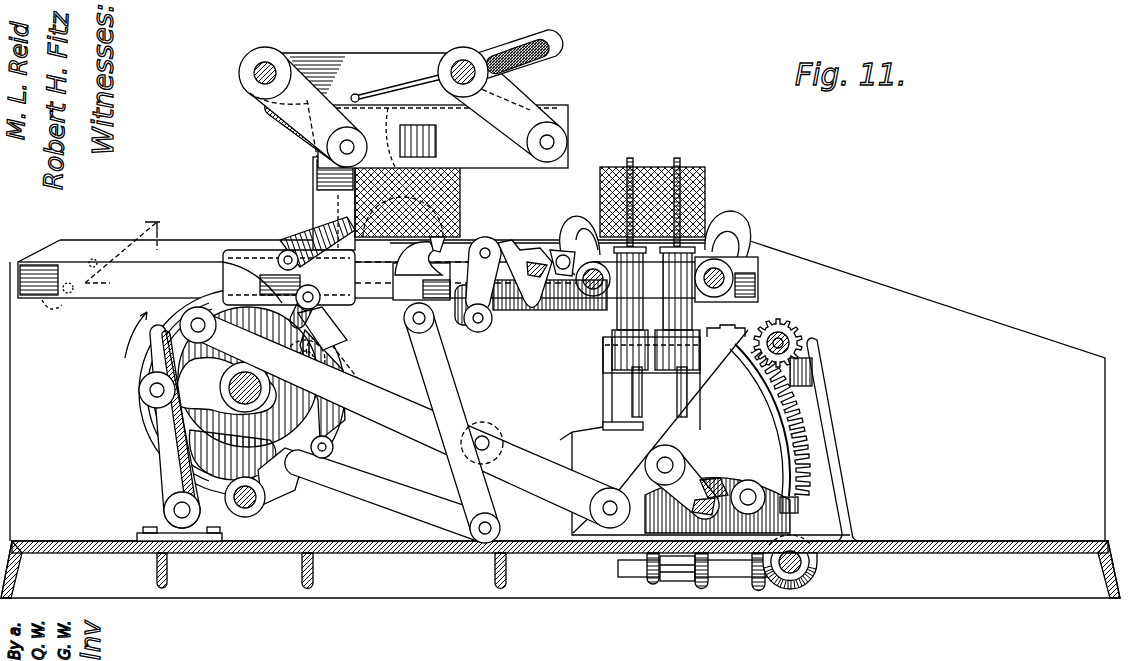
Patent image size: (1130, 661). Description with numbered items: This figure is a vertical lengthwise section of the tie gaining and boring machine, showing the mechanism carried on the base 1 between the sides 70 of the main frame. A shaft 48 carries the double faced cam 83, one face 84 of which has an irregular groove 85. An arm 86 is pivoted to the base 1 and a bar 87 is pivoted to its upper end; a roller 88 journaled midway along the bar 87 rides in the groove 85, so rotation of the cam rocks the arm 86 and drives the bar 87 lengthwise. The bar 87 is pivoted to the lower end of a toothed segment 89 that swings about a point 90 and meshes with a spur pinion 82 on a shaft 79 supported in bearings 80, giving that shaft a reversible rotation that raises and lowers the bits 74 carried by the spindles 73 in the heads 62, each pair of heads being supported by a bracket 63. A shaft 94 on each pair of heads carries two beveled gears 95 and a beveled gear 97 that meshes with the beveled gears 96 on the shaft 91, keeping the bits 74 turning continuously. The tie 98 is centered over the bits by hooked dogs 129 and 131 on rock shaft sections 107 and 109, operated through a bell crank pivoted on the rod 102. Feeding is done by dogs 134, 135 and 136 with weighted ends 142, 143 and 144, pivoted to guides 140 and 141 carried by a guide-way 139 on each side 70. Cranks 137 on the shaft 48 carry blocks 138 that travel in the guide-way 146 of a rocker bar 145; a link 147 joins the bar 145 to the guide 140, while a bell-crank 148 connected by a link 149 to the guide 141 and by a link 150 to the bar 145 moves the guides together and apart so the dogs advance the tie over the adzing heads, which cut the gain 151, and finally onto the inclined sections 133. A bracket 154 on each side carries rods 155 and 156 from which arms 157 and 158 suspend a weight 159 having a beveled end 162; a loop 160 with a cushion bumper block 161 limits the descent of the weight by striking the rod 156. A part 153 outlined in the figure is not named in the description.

The base 1 is at (432, 598).
The shaft 48 is at (215, 398).
The heads 62 is at (640, 345).
The bracket 63 is at (601, 376).
The sides of the main frame 70 is at (210, 245).
The spindle 73 is at (675, 398).
The bit 74 is at (675, 162).
The shaft 79 is at (795, 332).
The bearings 80 is at (820, 352).
The spur pinion 82 is at (805, 332).
The double faced cam 83 is at (138, 393).
The face of cam 84 is at (312, 456).
The irregular groove 85 is at (258, 410).
The arm 86 is at (155, 489).
The bar 87 is at (405, 417).
The roller 88 is at (198, 400).
The toothed segment 89 is at (691, 431).
The pivot point 90 is at (668, 458).
The shaft 91 is at (785, 590).
The shaft 94 is at (665, 583).
The beveled gears 95 is at (650, 585).
The beveled gears 96 is at (815, 575).
The beveled gears 97 is at (757, 590).
The tie 98 is at (462, 199).
The rod 102 is at (756, 500).
The rock shaft section 107 is at (550, 310).
The rock shaft section 109 is at (735, 277).
The hooked dog 129 is at (580, 226).
The hooked dog 131 is at (728, 235).
The downwardly inclined sections 133 is at (907, 300).
The dog 134 is at (330, 232).
The dog 135 is at (421, 271).
The dog 136 is at (562, 252).
The cranks 137 is at (348, 370).
The block 138 is at (346, 335).
The guide-way 139 is at (80, 280).
The guide 140 is at (245, 250).
The guide 141 is at (482, 325).
The weighted end 142 is at (223, 271).
The weighted end 143 is at (528, 312).
The weighted end 144 is at (507, 243).
The rocker bar 145 is at (268, 492).
The guide-way 146 is at (298, 487).
The link 147 is at (313, 288).
The bell-crank 148 is at (470, 398).
The link 149 is at (465, 328).
The link 150 is at (391, 496).
The gain 151 is at (462, 238).
The block 153 is at (150, 240).
The bracket 154 is at (312, 178).
The rod 155 is at (250, 86).
The rod 156 is at (463, 58).
The arms 157 is at (270, 110).
The arms 158 is at (519, 93).
The weight 159 is at (412, 110).
The loop 160 is at (513, 42).
The cushion bumper block 161 is at (560, 46).
The beveled end 162 is at (298, 142).